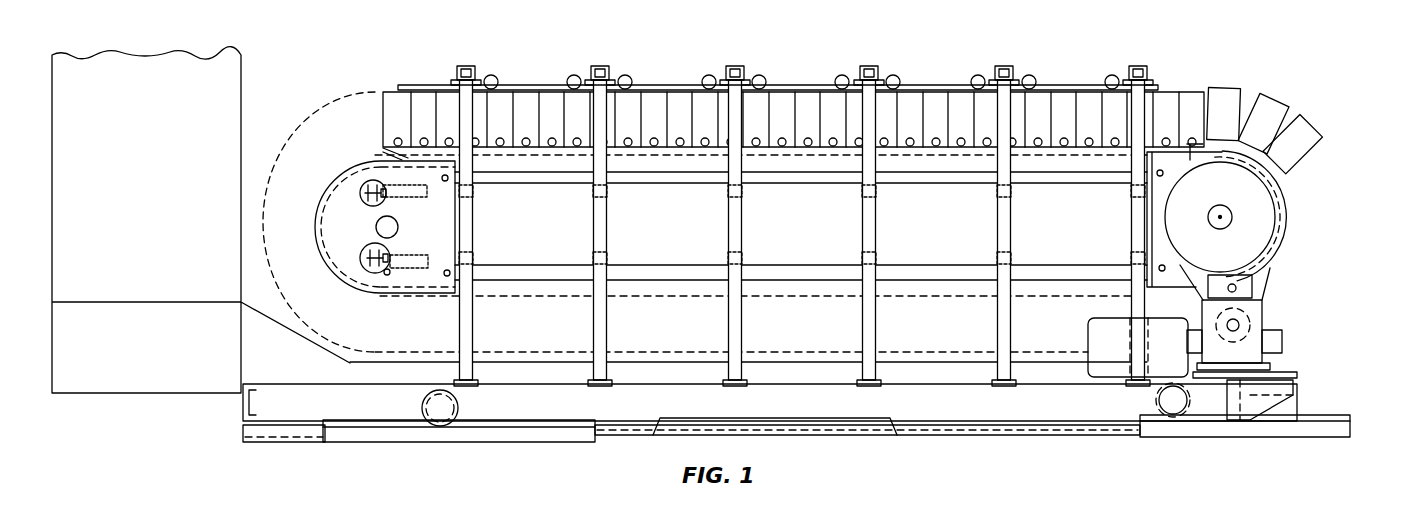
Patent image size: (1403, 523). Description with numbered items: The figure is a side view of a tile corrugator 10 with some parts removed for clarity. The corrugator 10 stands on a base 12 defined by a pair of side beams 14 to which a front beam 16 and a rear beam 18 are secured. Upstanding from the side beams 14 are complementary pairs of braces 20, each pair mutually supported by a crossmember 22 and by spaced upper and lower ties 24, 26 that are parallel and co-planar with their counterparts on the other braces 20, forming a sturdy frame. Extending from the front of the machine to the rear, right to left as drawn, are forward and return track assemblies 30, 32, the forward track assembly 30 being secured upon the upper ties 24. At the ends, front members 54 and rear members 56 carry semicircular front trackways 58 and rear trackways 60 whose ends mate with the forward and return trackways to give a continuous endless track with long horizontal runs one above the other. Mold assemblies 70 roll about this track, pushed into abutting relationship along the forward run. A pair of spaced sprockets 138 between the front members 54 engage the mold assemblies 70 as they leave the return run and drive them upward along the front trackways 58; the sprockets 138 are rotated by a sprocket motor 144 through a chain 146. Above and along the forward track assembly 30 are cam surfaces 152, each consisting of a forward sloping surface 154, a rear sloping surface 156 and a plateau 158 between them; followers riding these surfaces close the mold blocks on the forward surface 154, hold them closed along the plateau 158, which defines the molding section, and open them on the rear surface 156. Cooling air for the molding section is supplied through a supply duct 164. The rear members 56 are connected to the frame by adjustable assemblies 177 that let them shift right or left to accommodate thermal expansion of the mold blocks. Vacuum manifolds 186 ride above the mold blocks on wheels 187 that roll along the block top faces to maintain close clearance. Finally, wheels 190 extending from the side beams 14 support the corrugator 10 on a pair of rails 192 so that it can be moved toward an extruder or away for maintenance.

The tile corrugator 10 is at (1345, 50).
The base 12 is at (1316, 376).
The side beams 14 is at (1000, 417).
The front beam 16 is at (1293, 393).
The rear beam 18 is at (243, 408).
The braces 20 is at (474, 223).
The crossmember 22 is at (464, 66).
The upper ties 24 is at (474, 190).
The lower ties 26 is at (474, 258).
The forward track assembly 30 is at (981, 184).
The return track assembly 32 is at (970, 222).
The front members 54 is at (1280, 238).
The rear members 56 is at (348, 253).
The front trackways 58 is at (1288, 205).
The rear trackways 60 is at (338, 193).
The mold assemblies 70 is at (1238, 55).
The sprockets 138 is at (1288, 196).
The sprocket motor 144 is at (1132, 347).
The chain 146 is at (1262, 283).
The cam surfaces 152 is at (1217, 140).
The forward sloping surface 154 is at (1188, 143).
The rear sloping surface 156 is at (383, 151).
The plateau 158 is at (807, 156).
The supply duct 164 is at (139, 150).
The adjustable assemblies 177 is at (397, 250).
The vacuum manifolds 186 is at (521, 85).
The wheels 187 is at (511, 52).
The wheels 190 is at (430, 427).
The rails 192 is at (532, 443).